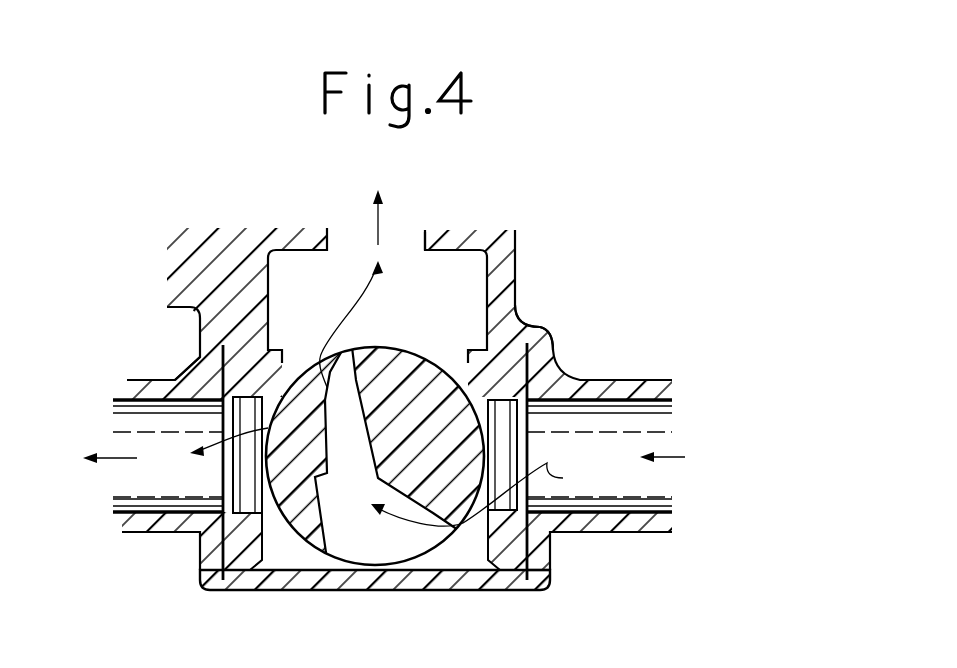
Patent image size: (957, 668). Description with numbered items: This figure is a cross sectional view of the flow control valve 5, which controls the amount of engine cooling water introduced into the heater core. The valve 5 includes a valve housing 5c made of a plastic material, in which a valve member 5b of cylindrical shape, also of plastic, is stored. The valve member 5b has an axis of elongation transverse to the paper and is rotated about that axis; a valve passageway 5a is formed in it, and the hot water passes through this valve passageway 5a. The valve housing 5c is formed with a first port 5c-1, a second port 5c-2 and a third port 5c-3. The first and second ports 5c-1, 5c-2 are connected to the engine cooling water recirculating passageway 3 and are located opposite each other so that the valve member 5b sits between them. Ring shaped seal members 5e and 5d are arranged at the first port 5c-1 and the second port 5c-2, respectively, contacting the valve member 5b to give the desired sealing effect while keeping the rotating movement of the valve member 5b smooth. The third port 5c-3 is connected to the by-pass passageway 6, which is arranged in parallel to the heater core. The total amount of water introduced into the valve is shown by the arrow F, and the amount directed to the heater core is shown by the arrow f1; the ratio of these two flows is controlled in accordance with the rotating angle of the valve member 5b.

The flow control valve 5 is at (216, 210).
The by-pass passageway 6 is at (397, 230).
The third port 5c-3 is at (447, 253).
The first port 5c-1 is at (533, 322).
The second port 5c-2 is at (212, 386).
The engine cooling water recirculating passageway 3 is at (168, 487).
The valve passageway 5a is at (380, 533).
The valve member 5b is at (303, 517).
The seal member 5d is at (237, 548).
The valve housing 5c is at (443, 578).
The seal member 5e is at (508, 588).
The arrow indicating total water flow introduced into the valve F is at (437, 477).
The arrow indicating water flow directed to the heater core f1 is at (118, 458).